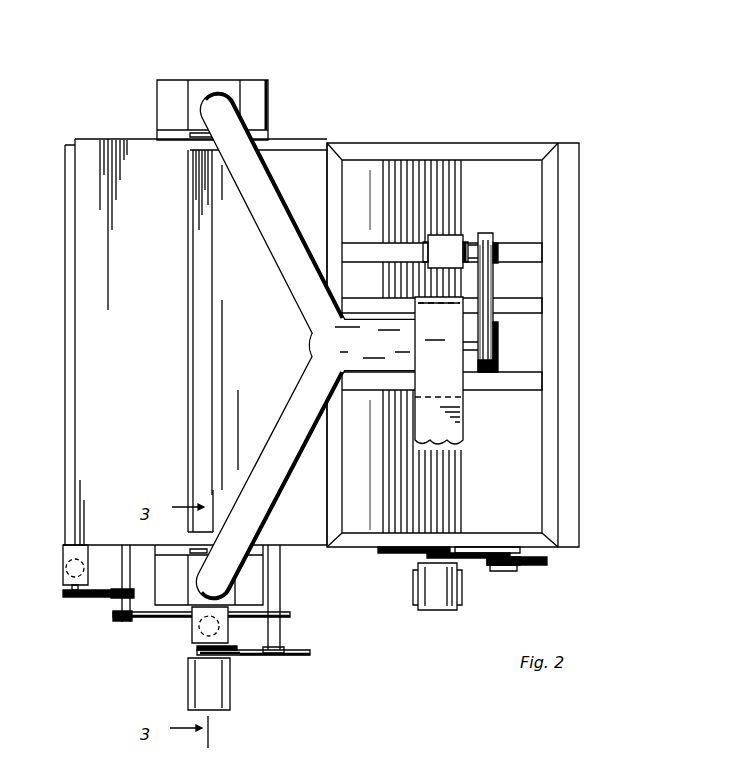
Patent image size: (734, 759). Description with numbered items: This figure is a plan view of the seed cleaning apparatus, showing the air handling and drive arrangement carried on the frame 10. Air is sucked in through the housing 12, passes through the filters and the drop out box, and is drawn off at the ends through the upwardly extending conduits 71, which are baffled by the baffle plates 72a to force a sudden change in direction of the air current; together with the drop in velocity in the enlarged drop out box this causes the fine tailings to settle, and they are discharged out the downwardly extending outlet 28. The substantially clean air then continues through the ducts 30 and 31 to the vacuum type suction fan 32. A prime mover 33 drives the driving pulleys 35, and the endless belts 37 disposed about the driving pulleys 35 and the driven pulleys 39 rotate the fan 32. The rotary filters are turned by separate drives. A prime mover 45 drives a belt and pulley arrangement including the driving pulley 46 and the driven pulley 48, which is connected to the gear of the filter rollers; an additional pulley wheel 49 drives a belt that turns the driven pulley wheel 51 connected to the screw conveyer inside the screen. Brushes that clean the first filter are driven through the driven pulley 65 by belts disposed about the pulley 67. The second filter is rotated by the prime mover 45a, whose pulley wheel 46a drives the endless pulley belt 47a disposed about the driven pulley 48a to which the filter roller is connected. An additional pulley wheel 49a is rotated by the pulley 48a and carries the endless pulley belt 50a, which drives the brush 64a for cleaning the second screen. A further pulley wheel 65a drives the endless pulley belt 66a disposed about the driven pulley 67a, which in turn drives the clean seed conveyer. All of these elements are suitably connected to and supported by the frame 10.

The frame 10 is at (583, 430).
The housing 12 is at (200, 285).
The outlet 28 is at (229, 636).
The duct 30 is at (282, 217).
The duct 31 is at (377, 343).
The suction fan 32 is at (439, 370).
The prime mover 33 is at (451, 251).
The driving pulleys 35 is at (486, 232).
The endless belts 37 is at (490, 291).
The driven pulleys 39 is at (498, 337).
The prime mover 45 is at (437, 612).
The prime mover 45a is at (232, 686).
The driving pulley 46 is at (450, 545).
The pulley wheel 46a is at (198, 650).
The endless pulley belt 47a is at (236, 654).
The driven pulley 48 is at (538, 563).
The driven pulley 48a is at (310, 652).
The pulley wheel 49 is at (518, 568).
The pulley wheel 49a is at (290, 616).
The endless pulley belt 50a is at (146, 613).
The driven pulley wheel 51 is at (494, 571).
The brush 64a is at (117, 621).
The driven pulley 65 is at (393, 556).
The pulley wheel 65a is at (125, 594).
The endless pulley belt 66a is at (112, 600).
The pulley 67 is at (497, 545).
The driven pulley 67a is at (65, 593).
The upwardly extending conduits 71 is at (235, 82).
The baffle plates 72a is at (192, 550).